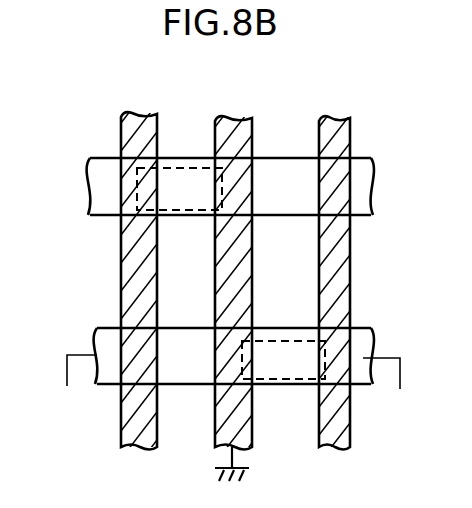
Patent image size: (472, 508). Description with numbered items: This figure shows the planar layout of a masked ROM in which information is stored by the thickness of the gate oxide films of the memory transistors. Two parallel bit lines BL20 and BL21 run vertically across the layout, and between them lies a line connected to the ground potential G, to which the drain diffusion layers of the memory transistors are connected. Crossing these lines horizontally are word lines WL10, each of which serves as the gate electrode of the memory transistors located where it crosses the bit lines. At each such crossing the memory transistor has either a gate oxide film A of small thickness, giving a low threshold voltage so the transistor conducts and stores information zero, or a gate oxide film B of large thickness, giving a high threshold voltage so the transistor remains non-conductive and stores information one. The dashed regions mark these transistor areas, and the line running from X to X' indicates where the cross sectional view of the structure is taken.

The bit line BL20 is at (122, 112).
The bit line BL21 is at (322, 113).
The ground potential G is at (218, 117).
The word line WL10 is at (90, 183).
The gate oxide film of small thickness A is at (190, 199).
The gate oxide film of large thickness B is at (290, 195).
The section line X is at (78, 386).
The section line X' is at (387, 387).